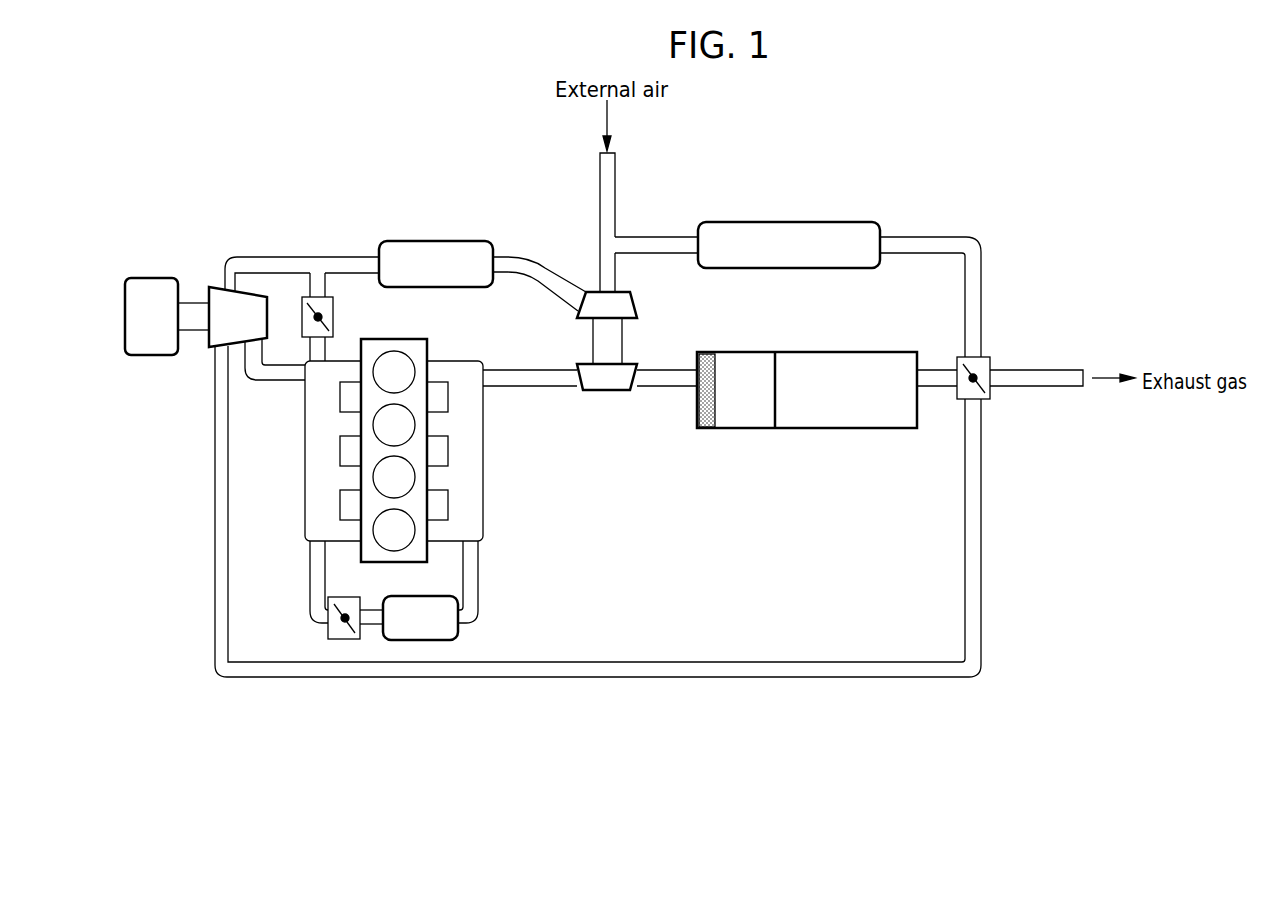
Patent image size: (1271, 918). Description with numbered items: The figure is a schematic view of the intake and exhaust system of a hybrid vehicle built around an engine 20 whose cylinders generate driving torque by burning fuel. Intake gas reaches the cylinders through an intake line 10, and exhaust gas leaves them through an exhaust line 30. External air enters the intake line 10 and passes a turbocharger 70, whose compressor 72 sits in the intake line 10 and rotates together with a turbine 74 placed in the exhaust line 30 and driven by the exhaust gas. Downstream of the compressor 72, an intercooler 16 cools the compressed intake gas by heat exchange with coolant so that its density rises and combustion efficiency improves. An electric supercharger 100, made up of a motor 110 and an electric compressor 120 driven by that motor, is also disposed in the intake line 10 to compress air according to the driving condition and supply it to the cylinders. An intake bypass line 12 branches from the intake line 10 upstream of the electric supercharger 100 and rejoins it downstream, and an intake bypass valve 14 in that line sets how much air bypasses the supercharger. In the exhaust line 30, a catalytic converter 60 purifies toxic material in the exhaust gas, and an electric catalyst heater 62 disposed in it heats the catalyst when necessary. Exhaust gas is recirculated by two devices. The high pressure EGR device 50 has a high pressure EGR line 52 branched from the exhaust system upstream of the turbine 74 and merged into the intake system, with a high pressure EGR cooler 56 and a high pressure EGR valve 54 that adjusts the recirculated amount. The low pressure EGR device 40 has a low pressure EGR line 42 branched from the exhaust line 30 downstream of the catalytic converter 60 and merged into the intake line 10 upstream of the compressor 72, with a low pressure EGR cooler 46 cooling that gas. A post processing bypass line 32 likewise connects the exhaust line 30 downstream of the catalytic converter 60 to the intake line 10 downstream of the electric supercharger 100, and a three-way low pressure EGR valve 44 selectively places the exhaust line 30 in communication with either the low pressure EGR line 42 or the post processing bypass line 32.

The intake line 10 is at (262, 257).
The intake bypass line 12 is at (327, 347).
The intake bypass valve 14 is at (304, 297).
The intercooler 16 is at (435, 241).
The engine 20 is at (446, 423).
The exhaust line 30 is at (1035, 387).
The post processing bypass line 32 is at (750, 678).
The low pressure EGR device 40 is at (995, 169).
The low pressure EGR line 42 is at (919, 237).
The low pressure EGR valve 44 is at (990, 359).
The low pressure EGR cooler 46 is at (787, 222).
The high pressure EGR device 50 is at (477, 731).
The high pressure EGR line 52 is at (467, 628).
The high pressure EGR valve 54 is at (345, 639).
The high pressure EGR cooler 56 is at (418, 640).
The catalytic converter 60 is at (840, 440).
The electric catalyst heater 62 is at (708, 428).
The turbocharger 70 is at (603, 452).
The compressor 72 is at (637, 311).
The turbine 74 is at (605, 393).
The electric supercharger 100 is at (267, 219).
The motor 110 is at (152, 278).
The electric compressor 120 is at (211, 287).